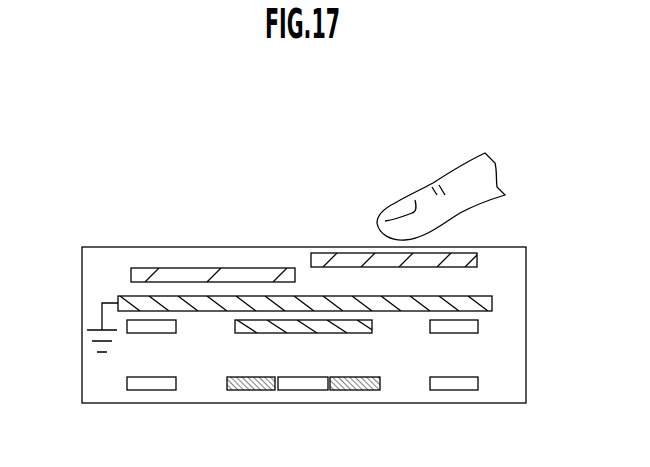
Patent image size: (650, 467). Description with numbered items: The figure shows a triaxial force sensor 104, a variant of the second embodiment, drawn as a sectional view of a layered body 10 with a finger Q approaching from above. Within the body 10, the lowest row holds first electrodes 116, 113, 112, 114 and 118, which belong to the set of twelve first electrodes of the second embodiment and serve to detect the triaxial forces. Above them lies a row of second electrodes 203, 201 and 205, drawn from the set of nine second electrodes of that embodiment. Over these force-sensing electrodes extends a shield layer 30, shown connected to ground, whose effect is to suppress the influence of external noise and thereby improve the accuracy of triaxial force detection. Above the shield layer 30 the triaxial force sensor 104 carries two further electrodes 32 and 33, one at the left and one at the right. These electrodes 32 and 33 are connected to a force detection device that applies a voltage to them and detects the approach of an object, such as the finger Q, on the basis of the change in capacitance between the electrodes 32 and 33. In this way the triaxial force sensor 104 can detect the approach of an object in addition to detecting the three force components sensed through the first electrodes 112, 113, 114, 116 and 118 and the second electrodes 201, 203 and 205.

The input device 10 is at (92, 246).
The shield layer 30 is at (130, 297).
The electrode 32 is at (267, 268).
The electrode 33 is at (361, 253).
The second electrode 201 is at (260, 320).
The second electrode 203 is at (152, 320).
The second electrode 205 is at (468, 321).
The triaxial force sensor 104 is at (436, 136).
The finger Q is at (418, 193).
The first electrode 112 is at (303, 390).
The first electrode 113 is at (250, 390).
The first electrode 114 is at (362, 390).
The first electrode 116 is at (155, 390).
The first electrode 118 is at (463, 390).